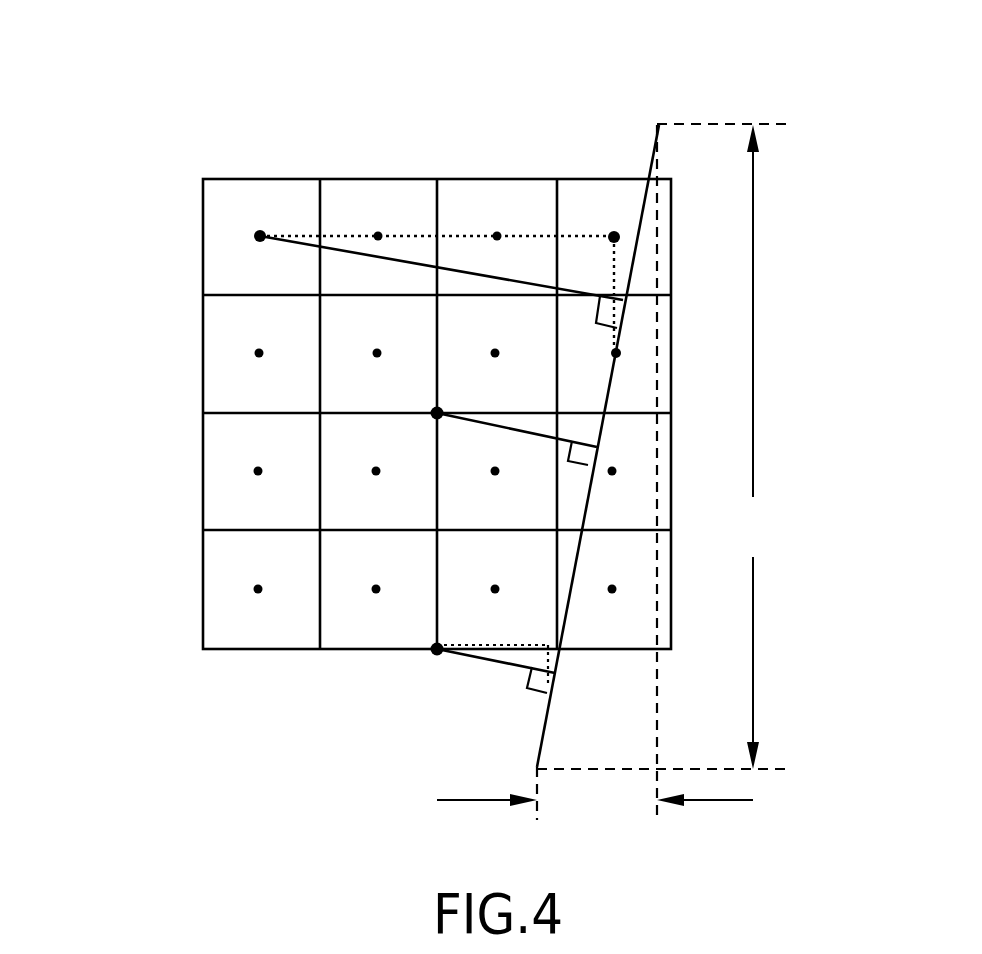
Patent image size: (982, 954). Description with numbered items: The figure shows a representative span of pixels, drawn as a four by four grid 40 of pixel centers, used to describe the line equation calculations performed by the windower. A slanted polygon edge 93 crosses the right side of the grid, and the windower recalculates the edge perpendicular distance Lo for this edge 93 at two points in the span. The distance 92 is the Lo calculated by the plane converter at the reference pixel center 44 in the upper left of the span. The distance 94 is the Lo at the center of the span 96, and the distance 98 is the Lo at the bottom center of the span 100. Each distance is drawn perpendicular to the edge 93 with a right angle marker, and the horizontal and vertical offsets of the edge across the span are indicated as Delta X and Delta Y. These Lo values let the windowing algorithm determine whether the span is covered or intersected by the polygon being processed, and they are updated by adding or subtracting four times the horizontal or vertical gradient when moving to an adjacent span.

The pixel grid 40 is at (203, 363).
The reference pixel center 44 is at (260, 235).
The distance 92 is at (467, 272).
The edge 93 is at (648, 158).
The distance 94 is at (545, 435).
The center of the span 96 is at (437, 413).
The distance 98 is at (510, 662).
The bottom center of the span 100 is at (432, 652).